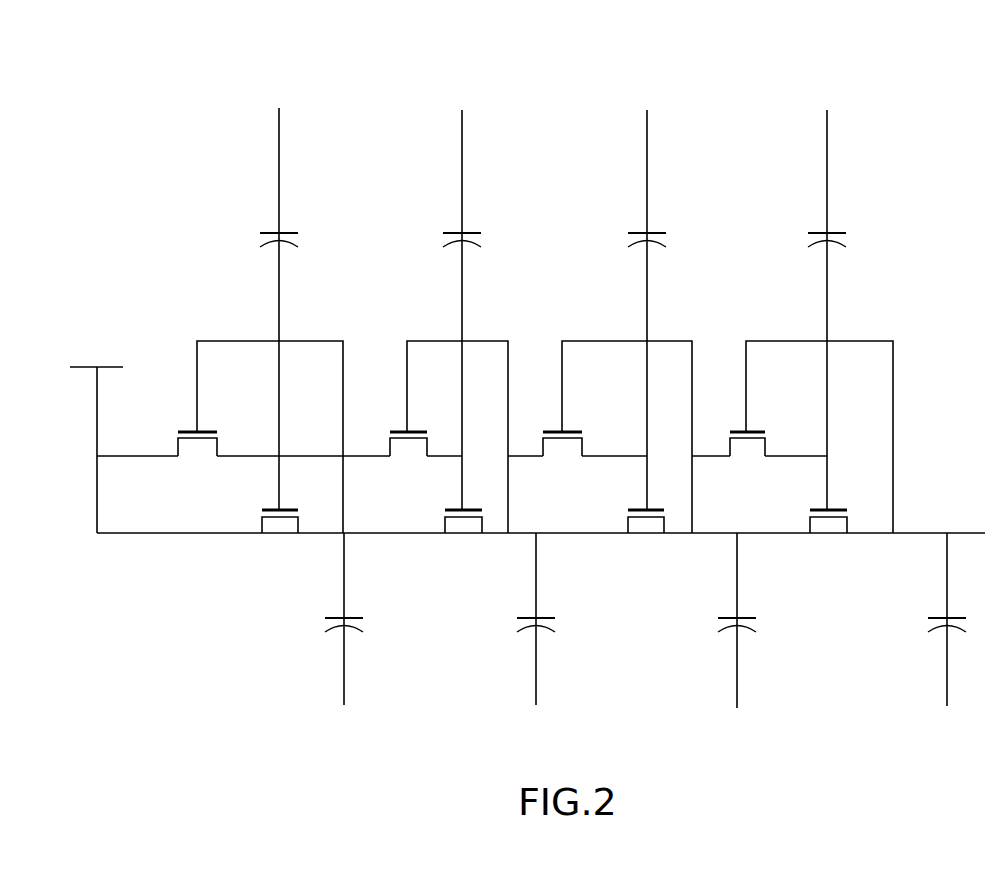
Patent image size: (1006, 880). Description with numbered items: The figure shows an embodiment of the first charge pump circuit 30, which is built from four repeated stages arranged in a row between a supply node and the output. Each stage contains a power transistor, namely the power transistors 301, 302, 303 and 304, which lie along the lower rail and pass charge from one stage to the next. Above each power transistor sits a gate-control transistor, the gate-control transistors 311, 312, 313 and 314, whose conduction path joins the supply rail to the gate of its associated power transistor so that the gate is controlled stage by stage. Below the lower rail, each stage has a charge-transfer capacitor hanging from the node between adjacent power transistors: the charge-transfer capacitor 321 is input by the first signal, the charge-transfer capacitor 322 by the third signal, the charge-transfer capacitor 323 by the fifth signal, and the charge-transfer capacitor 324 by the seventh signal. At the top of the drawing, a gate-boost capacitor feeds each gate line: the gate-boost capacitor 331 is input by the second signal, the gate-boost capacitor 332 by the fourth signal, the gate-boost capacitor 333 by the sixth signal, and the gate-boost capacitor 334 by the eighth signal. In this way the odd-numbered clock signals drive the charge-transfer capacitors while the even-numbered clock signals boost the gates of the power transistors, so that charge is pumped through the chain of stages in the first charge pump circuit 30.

The first charge pump circuit 30 is at (105, 67).
The power transistor 301 is at (282, 540).
The power transistor 302 is at (465, 522).
The power transistor 303 is at (645, 524).
The power transistor 304 is at (828, 524).
The gate-control transistor 311 is at (180, 430).
The gate-control transistor 312 is at (395, 430).
The gate-control transistor 313 is at (548, 430).
The gate-control transistor 314 is at (735, 430).
The charge-transfer capacitor 321 is at (322, 620).
The charge-transfer capacitor 322 is at (517, 625).
The charge-transfer capacitor 323 is at (715, 625).
The charge-transfer capacitor 324 is at (922, 625).
The gate-boost capacitor 331 is at (270, 229).
The gate-boost capacitor 332 is at (453, 229).
The gate-boost capacitor 333 is at (634, 229).
The gate-boost capacitor 334 is at (821, 229).